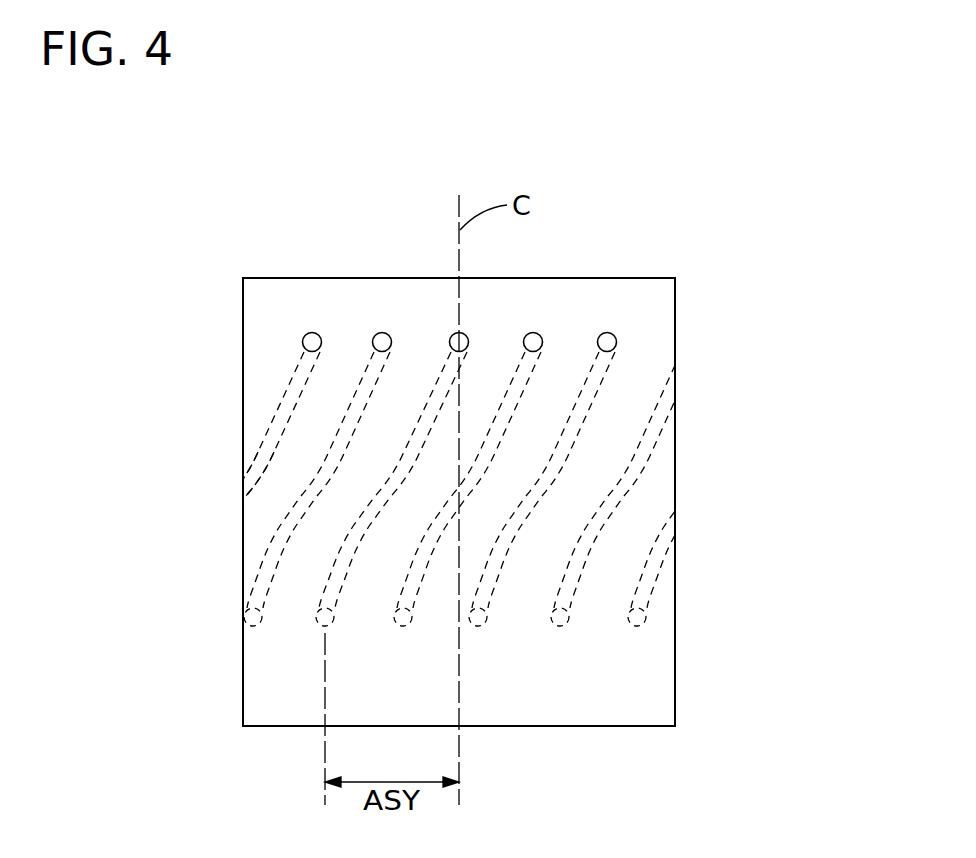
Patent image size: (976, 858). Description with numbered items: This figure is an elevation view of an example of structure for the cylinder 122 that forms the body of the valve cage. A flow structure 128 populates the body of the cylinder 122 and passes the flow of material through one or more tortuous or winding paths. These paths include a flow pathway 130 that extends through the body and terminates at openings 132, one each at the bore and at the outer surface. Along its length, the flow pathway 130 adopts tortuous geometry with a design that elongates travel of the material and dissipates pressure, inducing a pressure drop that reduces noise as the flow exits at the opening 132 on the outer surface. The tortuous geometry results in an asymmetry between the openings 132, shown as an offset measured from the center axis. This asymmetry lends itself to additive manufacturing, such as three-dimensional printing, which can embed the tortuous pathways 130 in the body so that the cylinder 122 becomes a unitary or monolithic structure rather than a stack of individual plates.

The cylinder 122 is at (712, 256).
The flow structure 128 is at (275, 394).
The flow pathway 130 is at (257, 515).
The opening 132 is at (464, 305).